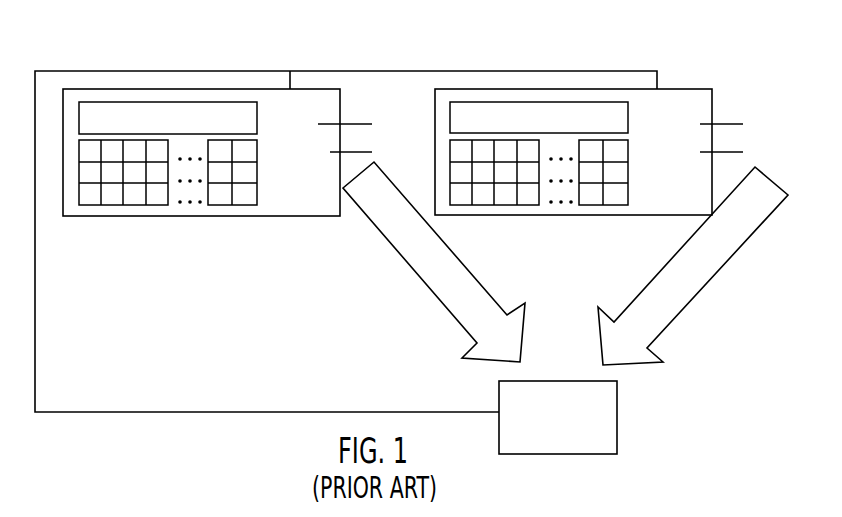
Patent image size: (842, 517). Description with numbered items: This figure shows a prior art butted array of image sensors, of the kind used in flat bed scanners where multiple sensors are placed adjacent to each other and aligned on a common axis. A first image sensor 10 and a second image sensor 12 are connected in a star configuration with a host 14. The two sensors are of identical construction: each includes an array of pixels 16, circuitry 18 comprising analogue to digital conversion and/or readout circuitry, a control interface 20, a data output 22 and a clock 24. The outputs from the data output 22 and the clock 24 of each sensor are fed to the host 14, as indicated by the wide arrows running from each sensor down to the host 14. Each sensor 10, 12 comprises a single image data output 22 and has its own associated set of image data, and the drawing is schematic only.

The first image sensor 10 is at (203, 88).
The second image sensor 12 is at (690, 88).
The host 14 is at (609, 410).
The array of pixels 16 is at (148, 185).
The circuitry 18 is at (247, 102).
The control interface 20 is at (304, 88).
The data output 22 is at (340, 124).
The clock 24 is at (340, 152).